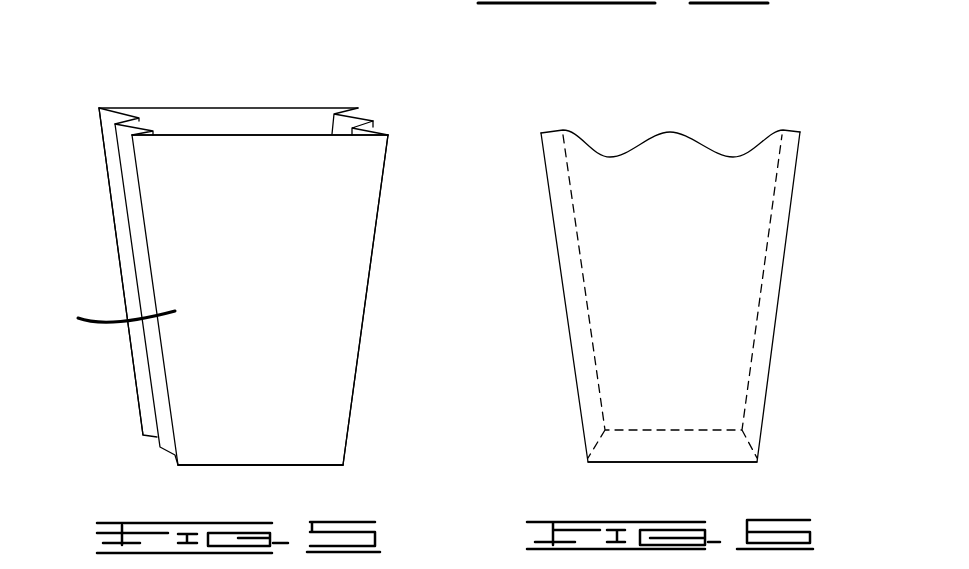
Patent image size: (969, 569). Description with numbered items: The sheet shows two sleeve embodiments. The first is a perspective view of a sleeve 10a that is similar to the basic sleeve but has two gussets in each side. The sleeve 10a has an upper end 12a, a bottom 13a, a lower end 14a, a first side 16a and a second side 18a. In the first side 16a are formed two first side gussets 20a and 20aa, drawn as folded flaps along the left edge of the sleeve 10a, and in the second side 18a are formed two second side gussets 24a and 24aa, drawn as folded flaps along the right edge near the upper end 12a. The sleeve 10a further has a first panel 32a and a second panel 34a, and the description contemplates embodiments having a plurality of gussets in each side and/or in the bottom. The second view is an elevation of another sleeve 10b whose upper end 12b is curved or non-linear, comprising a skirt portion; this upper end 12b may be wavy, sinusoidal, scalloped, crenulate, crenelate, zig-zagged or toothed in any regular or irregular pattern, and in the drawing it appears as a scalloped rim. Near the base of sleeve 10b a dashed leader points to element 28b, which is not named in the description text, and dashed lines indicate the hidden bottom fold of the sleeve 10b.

In FIG. 5, the sleeve 10a is at (122, 390).
In FIG. 5, the upper end 12a is at (229, 95).
In FIG. 5, the bottom 13a is at (176, 462).
In FIG. 5, the lower end 14a is at (318, 467).
In FIG. 5, the first side 16a is at (114, 254).
In FIG. 5, the second side 18a is at (380, 246).
In FIG. 5, the first side gusset 20a is at (112, 126).
In FIG. 5, the first side gusset 20aa is at (126, 146).
In FIG. 5, the second side gusset 24a is at (357, 113).
In FIG. 5, the second side gusset 24aa is at (373, 124).
In FIG. 5, the first panel 32a is at (100, 319).
In FIG. 5, the second panel 34a is at (270, 107).
In FIG. 6, the sleeve 10b is at (550, 316).
In FIG. 6, the upper end 12b is at (695, 132).
In FIG. 6, the bottom 28b is at (750, 443).